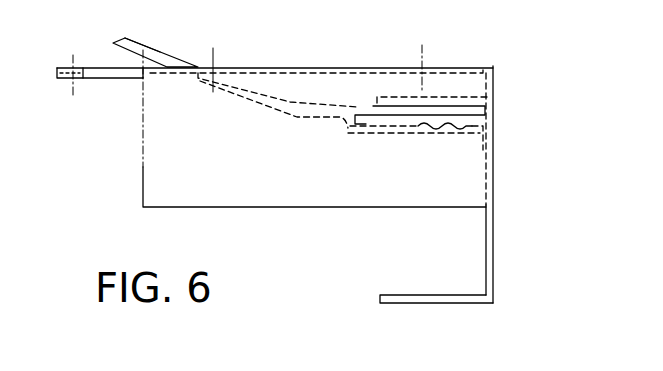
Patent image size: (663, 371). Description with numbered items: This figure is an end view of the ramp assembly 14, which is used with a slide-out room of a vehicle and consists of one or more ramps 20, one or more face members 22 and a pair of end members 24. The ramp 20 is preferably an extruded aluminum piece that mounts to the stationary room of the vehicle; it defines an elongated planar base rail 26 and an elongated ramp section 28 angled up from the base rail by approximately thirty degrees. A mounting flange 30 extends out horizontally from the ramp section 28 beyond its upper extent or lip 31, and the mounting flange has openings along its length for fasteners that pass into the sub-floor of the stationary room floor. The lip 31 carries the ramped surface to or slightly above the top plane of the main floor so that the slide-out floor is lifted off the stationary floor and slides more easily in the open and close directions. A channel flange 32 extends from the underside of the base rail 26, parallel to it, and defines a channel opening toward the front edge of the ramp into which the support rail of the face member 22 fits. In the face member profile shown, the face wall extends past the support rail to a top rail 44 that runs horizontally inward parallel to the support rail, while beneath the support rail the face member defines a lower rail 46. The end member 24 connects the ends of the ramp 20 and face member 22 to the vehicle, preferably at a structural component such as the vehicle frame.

The ramp assembly 14 is at (61, 170).
The ramp 20 is at (164, 50).
The face member 22 is at (496, 219).
The end member 24 is at (134, 168).
The base rail 26 is at (363, 95).
The ramp section 28 is at (270, 66).
The mounting flange 30 is at (105, 80).
The lip 31 is at (144, 40).
The channel flange 32 is at (384, 133).
The top rail 44 is at (478, 93).
The lower rail 46 is at (425, 305).